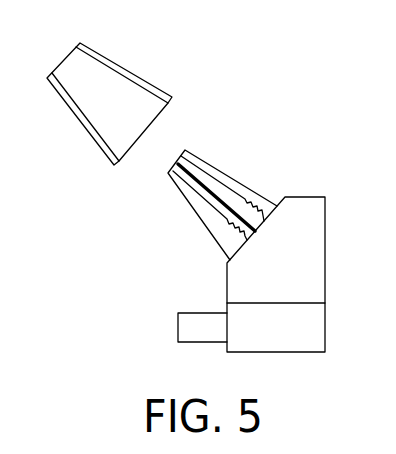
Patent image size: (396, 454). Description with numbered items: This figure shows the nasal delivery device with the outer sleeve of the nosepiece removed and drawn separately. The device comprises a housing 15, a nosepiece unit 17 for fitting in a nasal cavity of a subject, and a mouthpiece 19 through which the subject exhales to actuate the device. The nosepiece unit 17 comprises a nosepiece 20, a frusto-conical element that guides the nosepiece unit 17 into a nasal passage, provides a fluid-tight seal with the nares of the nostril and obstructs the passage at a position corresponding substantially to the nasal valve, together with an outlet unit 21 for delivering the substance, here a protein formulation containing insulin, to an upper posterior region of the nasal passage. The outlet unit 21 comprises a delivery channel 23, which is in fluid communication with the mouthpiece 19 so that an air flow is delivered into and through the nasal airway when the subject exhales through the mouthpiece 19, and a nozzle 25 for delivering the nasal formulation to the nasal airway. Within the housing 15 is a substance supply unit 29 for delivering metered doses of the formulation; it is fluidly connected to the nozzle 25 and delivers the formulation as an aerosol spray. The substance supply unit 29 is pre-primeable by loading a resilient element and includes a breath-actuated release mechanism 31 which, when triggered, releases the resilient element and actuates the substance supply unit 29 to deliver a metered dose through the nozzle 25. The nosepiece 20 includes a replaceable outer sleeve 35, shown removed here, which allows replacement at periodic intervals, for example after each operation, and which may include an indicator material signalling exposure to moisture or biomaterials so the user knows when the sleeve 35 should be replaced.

The housing 15 is at (303, 274).
The nosepiece unit 17 is at (202, 90).
The mouthpiece 19 is at (208, 336).
The nosepiece 20 is at (99, 90).
The outlet unit 21 is at (207, 188).
The delivery channel 23 is at (189, 187).
The nozzle 25 is at (211, 207).
The substance supply unit 29 is at (316, 273).
The breath-actuated release mechanism 31 is at (316, 330).
The replaceable outer sleeve 35 is at (73, 116).